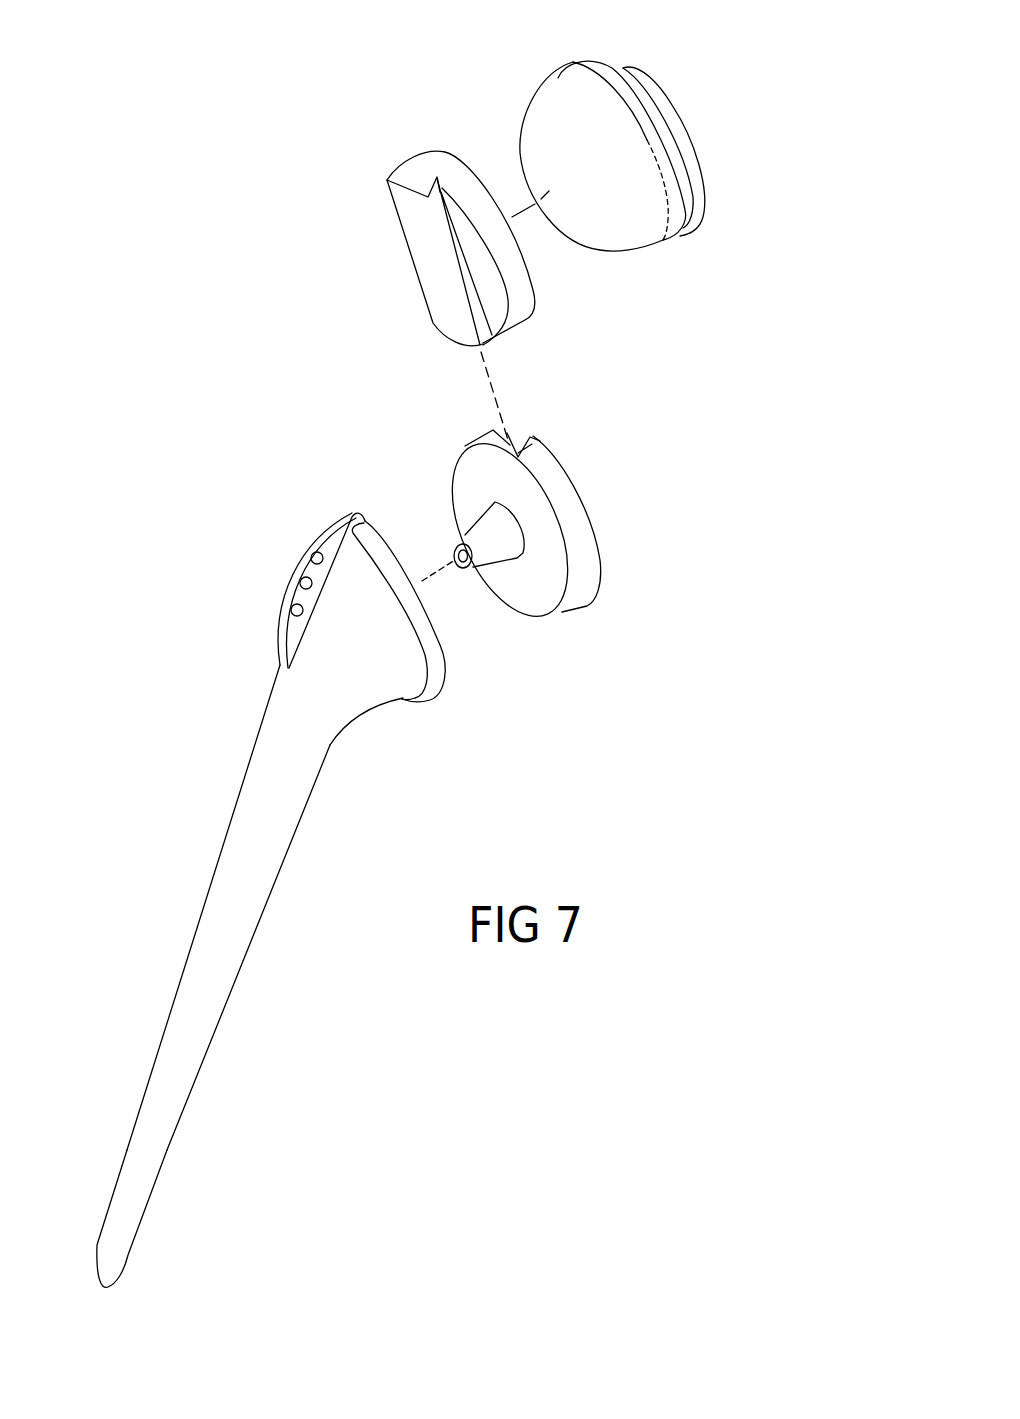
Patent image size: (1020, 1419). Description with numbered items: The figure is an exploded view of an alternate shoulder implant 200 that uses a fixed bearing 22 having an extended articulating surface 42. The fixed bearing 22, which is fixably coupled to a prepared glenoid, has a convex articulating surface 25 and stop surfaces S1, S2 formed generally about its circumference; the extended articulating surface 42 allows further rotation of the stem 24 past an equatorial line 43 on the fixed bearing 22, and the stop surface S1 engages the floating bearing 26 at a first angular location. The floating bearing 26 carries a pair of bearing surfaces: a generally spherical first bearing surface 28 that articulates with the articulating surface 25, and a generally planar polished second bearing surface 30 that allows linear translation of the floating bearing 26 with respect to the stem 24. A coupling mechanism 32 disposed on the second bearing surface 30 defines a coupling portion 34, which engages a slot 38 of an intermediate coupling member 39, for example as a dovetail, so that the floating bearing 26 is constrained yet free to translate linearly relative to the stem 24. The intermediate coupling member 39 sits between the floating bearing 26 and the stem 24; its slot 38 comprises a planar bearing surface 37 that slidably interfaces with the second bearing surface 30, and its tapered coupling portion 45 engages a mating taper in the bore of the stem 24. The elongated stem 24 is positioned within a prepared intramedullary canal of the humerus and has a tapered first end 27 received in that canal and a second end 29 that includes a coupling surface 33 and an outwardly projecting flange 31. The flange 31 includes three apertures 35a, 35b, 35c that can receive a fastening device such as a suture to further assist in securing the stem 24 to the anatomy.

The shoulder implant 200 is at (215, 603).
The fixed bearing 22 is at (515, 113).
The articulating surface 25 is at (617, 233).
The stop surface S1 is at (698, 207).
The stop surface S2 is at (567, 62).
The extended articulating surface 42 is at (680, 193).
The equatorial line 43 is at (665, 243).
The coupling mechanism 32 is at (385, 228).
The first bearing surface 28 is at (523, 273).
The coupling portion 34 is at (435, 176).
The second bearing surface 30 is at (457, 335).
The floating bearing 26 is at (520, 349).
The planar bearing surface 37 is at (567, 497).
The slot 38 is at (540, 441).
The intermediate coupling member 39 is at (585, 610).
The coupling portion 45 is at (467, 532).
The stem 24 is at (270, 927).
The first end 27 is at (170, 1118).
The second end 29 is at (418, 724).
The flange 31 is at (298, 511).
The coupling surface 33 is at (458, 684).
The aperture 35a is at (294, 616).
The aperture 35b is at (300, 581).
The aperture 35c is at (313, 552).